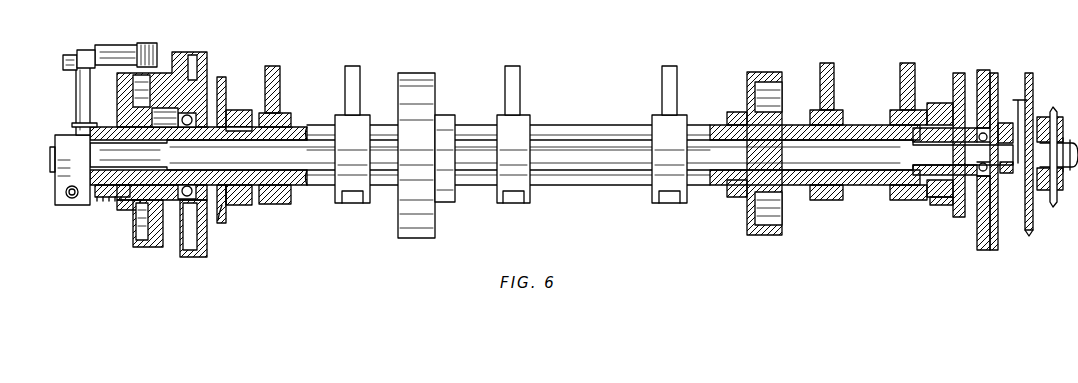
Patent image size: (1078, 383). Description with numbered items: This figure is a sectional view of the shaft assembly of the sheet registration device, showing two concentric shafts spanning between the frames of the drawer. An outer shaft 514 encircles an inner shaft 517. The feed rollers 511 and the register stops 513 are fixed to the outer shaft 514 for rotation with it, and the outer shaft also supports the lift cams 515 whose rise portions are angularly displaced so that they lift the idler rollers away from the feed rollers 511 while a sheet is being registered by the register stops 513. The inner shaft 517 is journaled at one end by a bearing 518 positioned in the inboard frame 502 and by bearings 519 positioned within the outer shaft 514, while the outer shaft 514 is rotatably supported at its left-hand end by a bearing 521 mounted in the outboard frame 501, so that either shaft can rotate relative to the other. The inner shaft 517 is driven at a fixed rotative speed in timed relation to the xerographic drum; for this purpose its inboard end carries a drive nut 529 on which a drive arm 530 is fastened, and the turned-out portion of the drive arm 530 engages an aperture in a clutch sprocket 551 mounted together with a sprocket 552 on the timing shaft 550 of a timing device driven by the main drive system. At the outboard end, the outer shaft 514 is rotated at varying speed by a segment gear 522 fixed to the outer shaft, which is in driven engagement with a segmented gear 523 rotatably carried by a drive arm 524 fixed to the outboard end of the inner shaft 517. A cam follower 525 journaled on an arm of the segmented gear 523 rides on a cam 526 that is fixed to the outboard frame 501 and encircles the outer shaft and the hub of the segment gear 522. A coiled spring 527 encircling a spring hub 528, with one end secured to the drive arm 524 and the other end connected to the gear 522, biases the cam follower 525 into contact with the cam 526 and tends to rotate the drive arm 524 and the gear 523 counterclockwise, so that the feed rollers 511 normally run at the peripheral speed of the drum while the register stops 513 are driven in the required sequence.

The outboard frame 501 is at (192, 257).
The inboard frame 502 is at (987, 253).
The feed rollers 511 is at (416, 73).
The register stops 513 is at (344, 72).
The outer shaft 514 is at (588, 126).
The lift cams 515 is at (222, 220).
The inner shaft 517 is at (309, 148).
The bearing 518 is at (982, 197).
The bearings 519 is at (126, 185).
The bearing 521 is at (219, 62).
The segment gear 522 is at (126, 205).
The segmented gear 523 is at (107, 83).
The drive arm 524 is at (67, 100).
The cam follower 525 is at (147, 43).
The cam 526 is at (166, 55).
The coiled spring 527 is at (97, 120).
The spring hub 528 is at (57, 177).
The drive nut 529 is at (1013, 123).
The drive arm 530 is at (1018, 110).
The timing shaft 550 is at (1067, 143).
The clutch sprocket 551 is at (1033, 233).
The sprocket 552 is at (1053, 198).